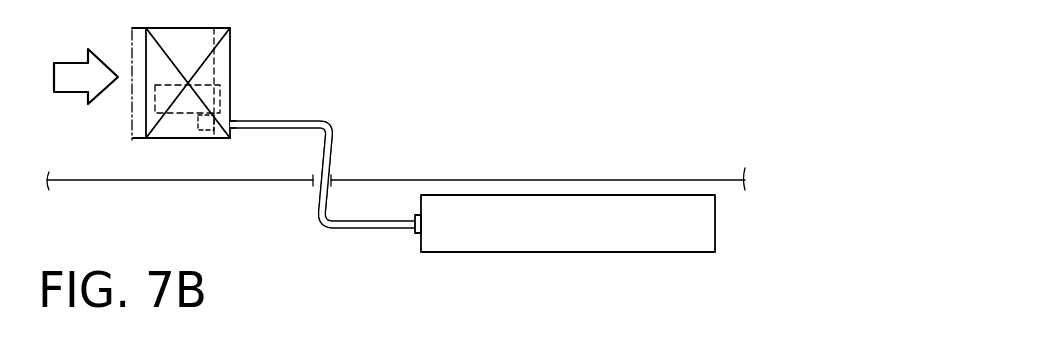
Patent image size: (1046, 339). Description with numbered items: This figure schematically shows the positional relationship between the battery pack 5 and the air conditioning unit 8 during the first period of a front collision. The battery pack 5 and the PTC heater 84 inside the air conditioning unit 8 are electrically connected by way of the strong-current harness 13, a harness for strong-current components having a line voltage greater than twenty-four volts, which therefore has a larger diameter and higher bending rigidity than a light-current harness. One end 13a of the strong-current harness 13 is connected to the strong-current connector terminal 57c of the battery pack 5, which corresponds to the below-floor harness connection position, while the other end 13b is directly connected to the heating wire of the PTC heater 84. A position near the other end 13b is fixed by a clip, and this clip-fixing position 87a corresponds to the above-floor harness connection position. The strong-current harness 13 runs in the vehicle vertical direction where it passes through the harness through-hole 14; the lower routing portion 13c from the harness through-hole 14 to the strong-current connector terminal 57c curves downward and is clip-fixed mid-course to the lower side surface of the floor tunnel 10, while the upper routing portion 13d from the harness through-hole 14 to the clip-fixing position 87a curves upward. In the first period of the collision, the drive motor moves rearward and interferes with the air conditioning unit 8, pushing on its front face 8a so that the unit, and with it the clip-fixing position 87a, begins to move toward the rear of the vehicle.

The battery pack 5 is at (563, 236).
The air conditioning unit 8 is at (153, 51).
The front face 8a is at (146, 113).
The floor tunnel 10 is at (714, 178).
The strong-current harness 13 is at (351, 110).
The one end 13a is at (409, 216).
The other end 13b is at (210, 137).
The lower routing portion 13c is at (326, 225).
The upper routing portion 13d is at (330, 122).
The harness through-hole 14 is at (328, 176).
The strong-current connector terminal 57c is at (417, 233).
The PTC heater 84 is at (230, 88).
The clip-fixing position 87a is at (232, 125).